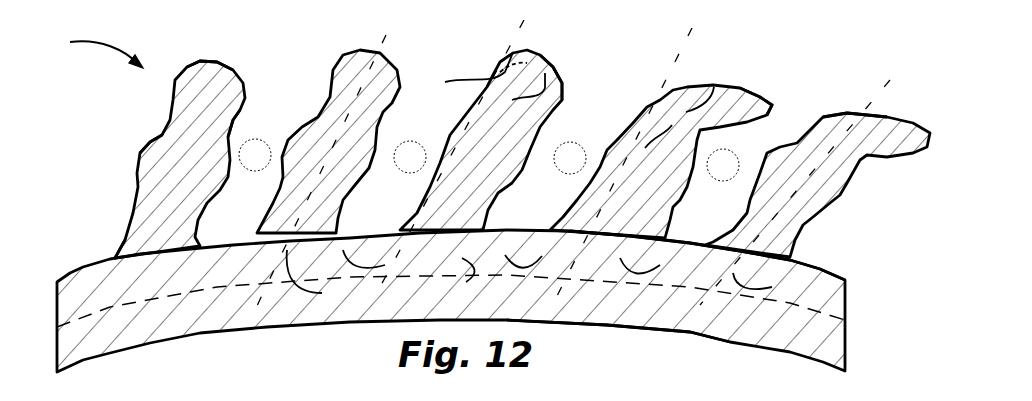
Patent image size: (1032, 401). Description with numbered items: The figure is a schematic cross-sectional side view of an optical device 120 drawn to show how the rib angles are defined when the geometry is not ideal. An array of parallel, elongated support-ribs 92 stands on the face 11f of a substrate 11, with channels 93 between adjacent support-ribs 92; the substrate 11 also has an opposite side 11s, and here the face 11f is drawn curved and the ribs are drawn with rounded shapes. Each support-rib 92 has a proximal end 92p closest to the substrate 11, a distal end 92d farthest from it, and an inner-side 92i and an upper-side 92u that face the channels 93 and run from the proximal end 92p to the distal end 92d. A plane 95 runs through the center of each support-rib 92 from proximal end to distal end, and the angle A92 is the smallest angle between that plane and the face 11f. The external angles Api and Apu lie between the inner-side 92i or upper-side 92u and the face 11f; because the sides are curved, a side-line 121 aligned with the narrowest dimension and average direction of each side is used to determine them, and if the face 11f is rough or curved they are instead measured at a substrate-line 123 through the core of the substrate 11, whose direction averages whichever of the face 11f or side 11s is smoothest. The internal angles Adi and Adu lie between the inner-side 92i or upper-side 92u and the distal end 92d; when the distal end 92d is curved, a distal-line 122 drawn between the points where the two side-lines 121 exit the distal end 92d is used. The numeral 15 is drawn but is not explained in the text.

The optical device 120 is at (83, 49).
The support-rib 92 is at (203, 167).
The distal end 92d is at (215, 63).
The inner-side 92i is at (233, 123).
The upper-side 92u is at (137, 161).
The proximal end 92p is at (140, 252).
The channel 93 is at (489, 160).
The plane 95 is at (392, 27).
The side-line 121 is at (525, 24).
The distal-line 122 is at (550, 67).
The rib head surface 15 is at (866, 108).
The substrate 11 is at (94, 351).
The face of the substrate 11f is at (823, 270).
The side of the substrate 11s is at (628, 329).
The substrate-line 123 is at (194, 290).
The angle Adu is at (550, 118).
The angle Adi is at (607, 99).
The angle Apu is at (440, 250).
The angle Api is at (567, 279).
The angle A92 is at (540, 285).